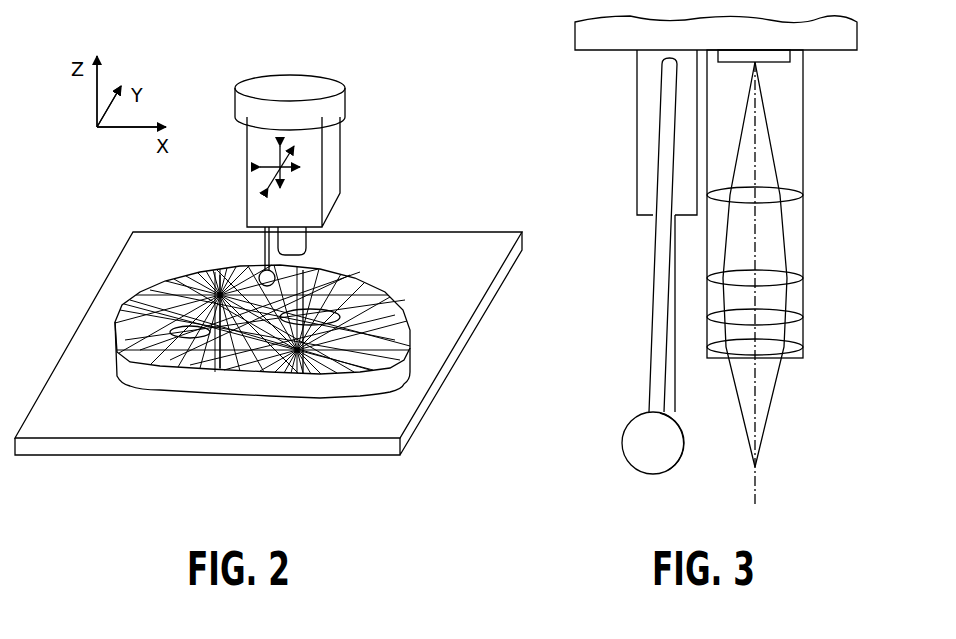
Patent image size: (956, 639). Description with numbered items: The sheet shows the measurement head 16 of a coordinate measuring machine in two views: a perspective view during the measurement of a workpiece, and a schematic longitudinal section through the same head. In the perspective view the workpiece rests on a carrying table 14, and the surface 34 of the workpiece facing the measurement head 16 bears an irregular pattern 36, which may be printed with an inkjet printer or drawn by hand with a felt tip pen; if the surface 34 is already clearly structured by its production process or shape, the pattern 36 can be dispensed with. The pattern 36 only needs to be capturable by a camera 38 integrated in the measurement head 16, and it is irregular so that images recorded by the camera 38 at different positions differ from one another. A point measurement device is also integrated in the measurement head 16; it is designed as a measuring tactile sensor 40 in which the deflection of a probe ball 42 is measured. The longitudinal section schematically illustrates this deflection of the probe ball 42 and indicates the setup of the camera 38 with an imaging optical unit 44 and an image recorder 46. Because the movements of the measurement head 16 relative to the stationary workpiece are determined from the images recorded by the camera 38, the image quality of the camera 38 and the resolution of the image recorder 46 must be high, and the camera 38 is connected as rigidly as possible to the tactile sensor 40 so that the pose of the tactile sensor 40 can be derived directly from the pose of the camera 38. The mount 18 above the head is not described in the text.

In FIG. 2, the carrying table 14 is at (432, 398).
In FIG. 2, the measurement head 16 is at (350, 158).
In FIG. 2, the print head mount 18 is at (345, 100).
In FIG. 2, the surface 34 is at (276, 319).
In FIG. 2, the irregular pattern 36 is at (332, 276).
In FIG. 2, the camera 38 is at (300, 240).
In FIG. 3, the camera 38 is at (811, 277).
In FIG. 2, the tactile sensor 40 is at (262, 240).
In FIG. 3, the tactile sensor 40 is at (612, 222).
In FIG. 2, the probe ball 42 is at (258, 270).
In FIG. 3, the probe ball 42 is at (628, 450).
In FIG. 3, the imaging optical unit 44 is at (880, 180).
In FIG. 3, the image recorder 46 is at (776, 62).